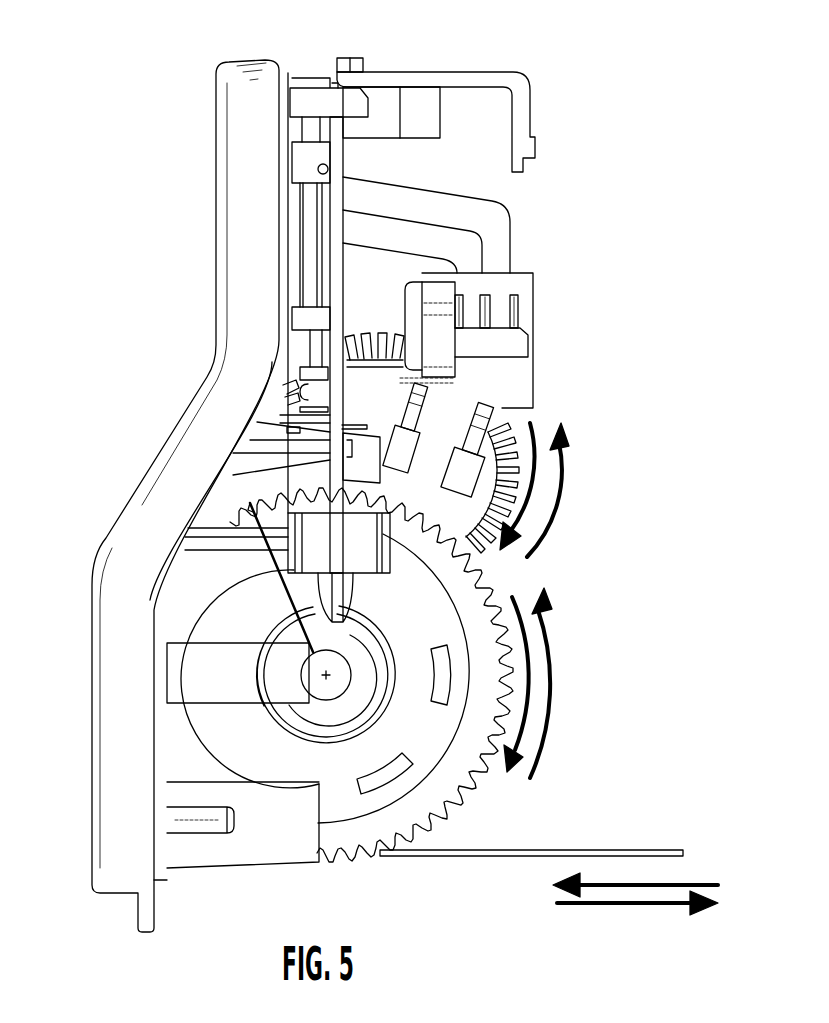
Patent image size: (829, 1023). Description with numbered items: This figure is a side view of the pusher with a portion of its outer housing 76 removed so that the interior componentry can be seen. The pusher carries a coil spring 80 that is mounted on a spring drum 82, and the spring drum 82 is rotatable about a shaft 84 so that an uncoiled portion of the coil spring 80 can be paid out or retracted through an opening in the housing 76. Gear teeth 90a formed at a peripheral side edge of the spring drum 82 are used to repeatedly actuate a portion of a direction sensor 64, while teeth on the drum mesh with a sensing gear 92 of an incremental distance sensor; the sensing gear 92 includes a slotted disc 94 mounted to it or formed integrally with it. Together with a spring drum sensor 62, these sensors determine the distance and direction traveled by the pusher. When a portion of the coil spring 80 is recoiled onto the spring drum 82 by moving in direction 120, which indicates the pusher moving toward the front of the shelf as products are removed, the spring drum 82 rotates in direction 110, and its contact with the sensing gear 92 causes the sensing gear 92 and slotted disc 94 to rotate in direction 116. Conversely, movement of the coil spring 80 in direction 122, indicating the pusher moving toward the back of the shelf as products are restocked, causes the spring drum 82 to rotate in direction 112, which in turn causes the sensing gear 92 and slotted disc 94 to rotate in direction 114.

The spring drum sensor 62 is at (263, 587).
The direction sensor 64 is at (382, 400).
The outer housing 76 is at (222, 107).
The coil spring 80 is at (617, 850).
The spring drum 82 is at (367, 806).
The shaft 84 is at (318, 677).
The gear teeth 90a is at (437, 802).
The sensing gear 92 is at (442, 418).
The slotted disc 94 is at (453, 514).
The direction 110 is at (530, 693).
The direction 112 is at (557, 650).
The direction 114 is at (533, 480).
The direction 116 is at (557, 508).
The direction 120 is at (687, 879).
The direction 122 is at (657, 907).